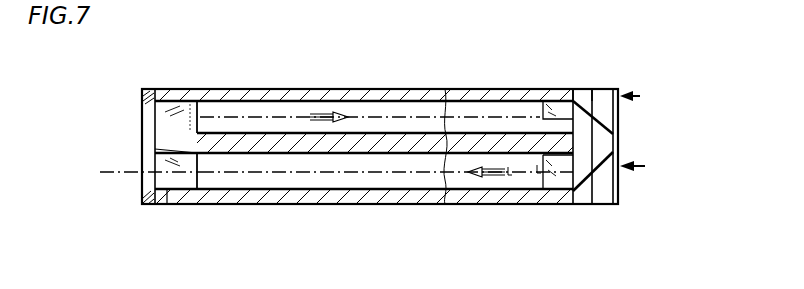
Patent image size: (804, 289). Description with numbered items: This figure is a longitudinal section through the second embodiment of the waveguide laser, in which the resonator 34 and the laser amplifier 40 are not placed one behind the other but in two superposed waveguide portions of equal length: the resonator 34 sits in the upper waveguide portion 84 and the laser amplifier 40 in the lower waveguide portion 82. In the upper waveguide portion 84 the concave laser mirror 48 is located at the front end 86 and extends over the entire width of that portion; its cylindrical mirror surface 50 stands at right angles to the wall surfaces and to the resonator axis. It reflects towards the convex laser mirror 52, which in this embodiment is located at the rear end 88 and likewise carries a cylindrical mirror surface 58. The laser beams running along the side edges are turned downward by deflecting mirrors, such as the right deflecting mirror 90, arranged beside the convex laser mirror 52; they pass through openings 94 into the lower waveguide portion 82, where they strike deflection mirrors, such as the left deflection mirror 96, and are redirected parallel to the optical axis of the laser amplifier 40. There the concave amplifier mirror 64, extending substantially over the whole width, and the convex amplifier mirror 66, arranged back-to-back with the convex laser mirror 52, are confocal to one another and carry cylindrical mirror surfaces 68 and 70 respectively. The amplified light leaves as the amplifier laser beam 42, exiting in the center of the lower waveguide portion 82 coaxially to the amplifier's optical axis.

The resonator 34 is at (293, 113).
The laser amplifier 40 is at (323, 177).
The amplifier laser beam 42 is at (124, 172).
The concave laser mirror 48 is at (165, 101).
The cylindrical mirror surface 50 is at (187, 90).
The convex laser mirror 52 is at (565, 100).
The cylindrical mirror surface 58 is at (519, 100).
The concave amplifier mirror 64 is at (173, 177).
The convex amplifier mirror 66 is at (585, 160).
The cylindrical mirror surface 68 is at (189, 182).
The cylindrical mirror surface 70 is at (535, 183).
The lower waveguide portion 82 is at (645, 166).
The upper waveguide portion 84 is at (640, 95).
The front end 86 is at (145, 108).
The rear end 88 is at (622, 188).
The right deflecting mirror 90 is at (605, 88).
The openings 94 is at (615, 132).
The left deflection mirror 96 is at (605, 195).